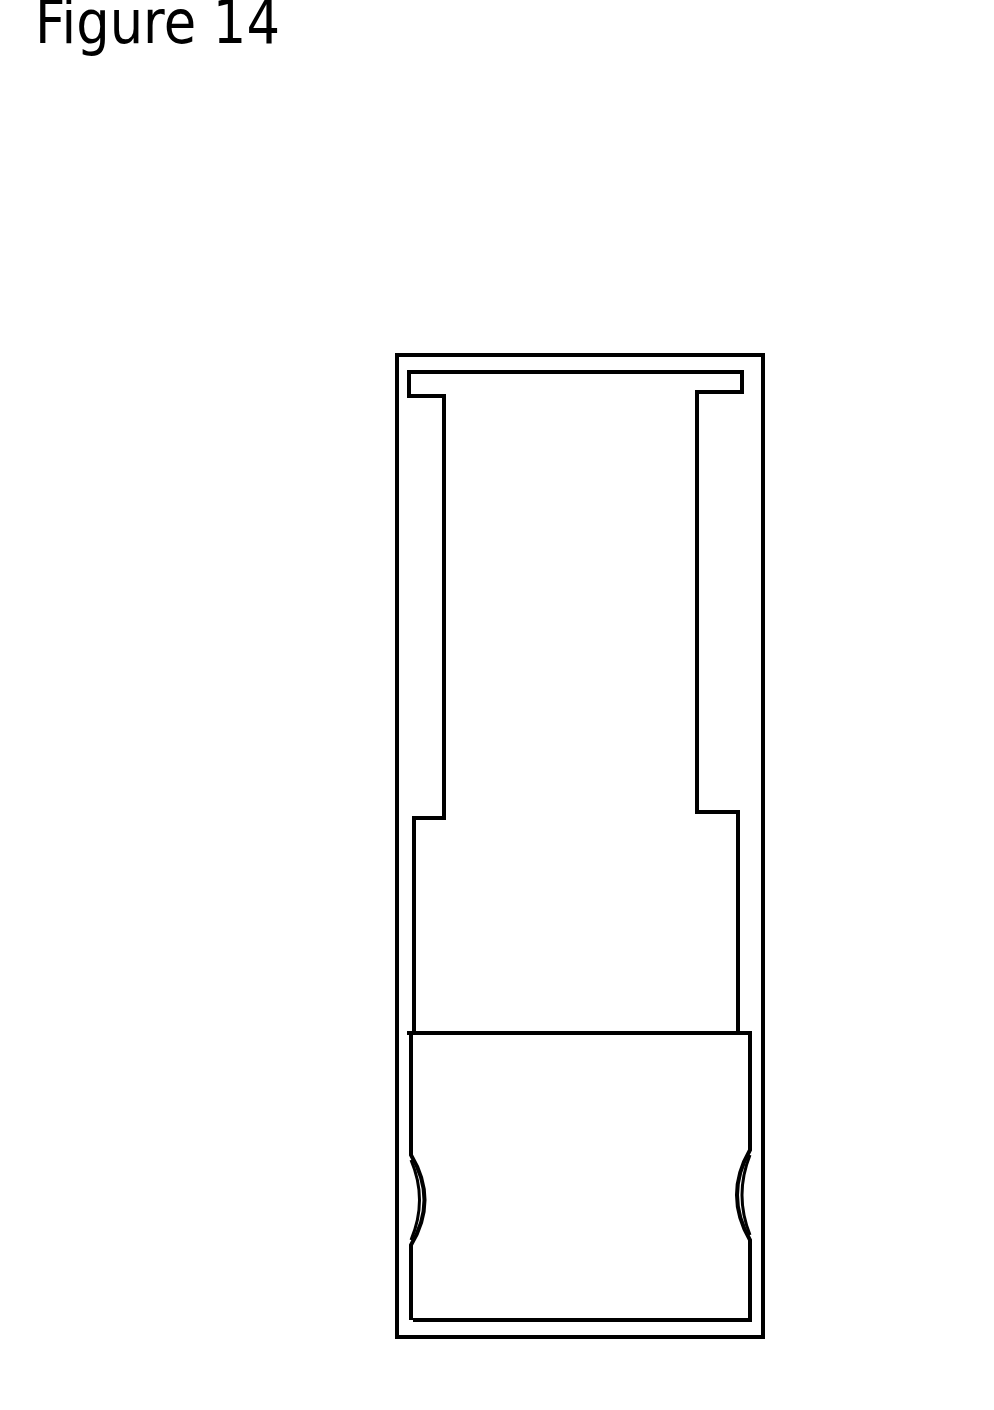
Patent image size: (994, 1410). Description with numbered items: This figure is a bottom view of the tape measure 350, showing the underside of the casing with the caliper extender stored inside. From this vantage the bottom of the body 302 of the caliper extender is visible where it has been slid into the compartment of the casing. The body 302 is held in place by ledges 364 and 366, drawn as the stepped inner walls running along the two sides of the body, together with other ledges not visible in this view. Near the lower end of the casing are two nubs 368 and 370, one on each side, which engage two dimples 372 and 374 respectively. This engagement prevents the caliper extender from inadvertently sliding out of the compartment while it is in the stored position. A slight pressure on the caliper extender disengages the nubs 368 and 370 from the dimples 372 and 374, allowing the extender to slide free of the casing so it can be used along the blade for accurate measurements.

The tape measure 350 is at (578, 228).
The body 302 is at (597, 712).
The ledge 364 is at (738, 554).
The ledge 366 is at (430, 552).
The nub 368 is at (753, 1190).
The nub 370 is at (415, 1202).
The dimple 372 is at (727, 1199).
The dimple 374 is at (435, 1202).